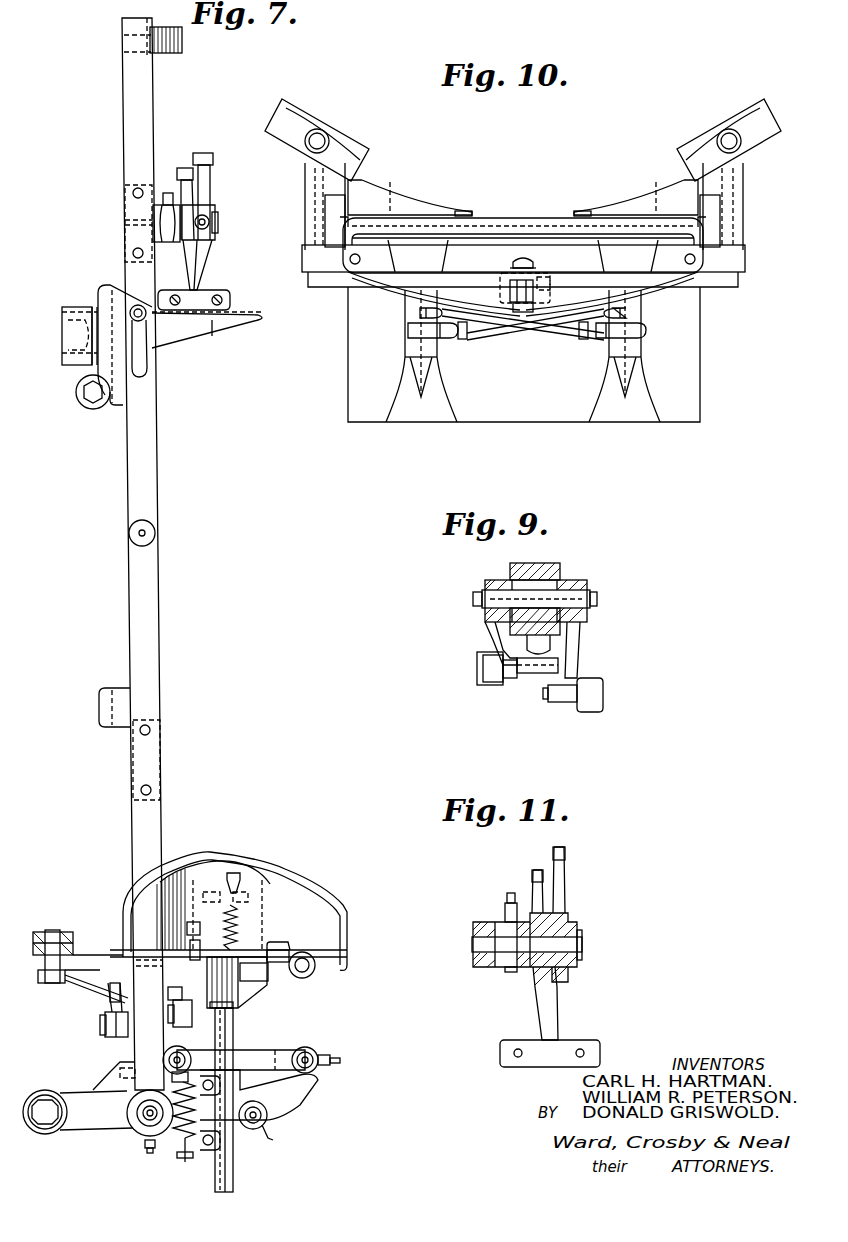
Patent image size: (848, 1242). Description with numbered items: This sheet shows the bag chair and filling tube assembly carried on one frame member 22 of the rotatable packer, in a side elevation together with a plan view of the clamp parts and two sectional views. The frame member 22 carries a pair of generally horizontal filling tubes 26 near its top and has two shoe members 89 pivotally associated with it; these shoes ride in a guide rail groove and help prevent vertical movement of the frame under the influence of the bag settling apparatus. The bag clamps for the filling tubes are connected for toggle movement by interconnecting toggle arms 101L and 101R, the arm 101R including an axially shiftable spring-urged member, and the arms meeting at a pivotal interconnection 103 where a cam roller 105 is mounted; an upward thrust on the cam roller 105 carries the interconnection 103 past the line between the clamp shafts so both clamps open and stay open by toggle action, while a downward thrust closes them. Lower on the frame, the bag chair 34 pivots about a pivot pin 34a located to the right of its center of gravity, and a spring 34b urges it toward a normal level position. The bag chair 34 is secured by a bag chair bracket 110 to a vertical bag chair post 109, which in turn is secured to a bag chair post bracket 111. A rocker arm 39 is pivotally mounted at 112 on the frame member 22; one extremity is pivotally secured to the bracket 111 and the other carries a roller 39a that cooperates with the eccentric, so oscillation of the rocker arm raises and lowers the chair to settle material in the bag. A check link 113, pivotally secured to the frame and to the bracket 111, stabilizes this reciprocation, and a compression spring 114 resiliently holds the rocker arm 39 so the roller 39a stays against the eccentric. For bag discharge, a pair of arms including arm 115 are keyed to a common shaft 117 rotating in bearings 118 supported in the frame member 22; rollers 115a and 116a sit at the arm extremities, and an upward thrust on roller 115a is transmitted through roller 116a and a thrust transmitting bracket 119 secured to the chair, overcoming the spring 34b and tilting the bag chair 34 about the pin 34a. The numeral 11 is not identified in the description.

In FIG. 7, the frame member 22 is at (160, 680).
In FIG. 7, the pair of filling tubes 26 is at (235, 325).
In FIG. 7, the bag chair 34 is at (300, 877).
In FIG. 7, the pivot pin 34a is at (316, 975).
In FIG. 7, the spring 34b is at (237, 925).
In FIG. 7, the rocker arm 39 is at (77, 1099).
In FIG. 7, the roller 39a is at (45, 1090).
In FIG. 7, the shoe member 89 is at (73, 930).
In FIG. 10, the shoe member 89 is at (302, 124).
In FIG. 10, the left toggle arm 101L is at (475, 287).
In FIG. 10, the right toggle arm 101R is at (588, 257).
In FIG. 10, the pivotal interconnection 103 is at (518, 256).
In FIG. 10, the cam roller 105 is at (535, 262).
In FIG. 10, the support leg 11 is at (405, 304).
In FIG. 7, the bag chair post 109 is at (233, 1175).
In FIG. 7, the bag chair bracket 110 is at (260, 998).
In FIG. 9, the bag chair bracket 110 is at (578, 650).
In FIG. 7, the bag chair post bracket 111 is at (282, 1105).
In FIG. 7, the pivot 112 is at (145, 1120).
In FIG. 7, the check link 113 is at (268, 1050).
In FIG. 7, the compression spring 114 is at (205, 1040).
In FIG. 9, the arm 115 is at (500, 633).
In FIG. 7, the roller 115a is at (105, 1035).
In FIG. 9, the roller 115a is at (498, 665).
In FIG. 7, the roller 116a is at (192, 1025).
In FIG. 9, the roller 116a is at (600, 682).
In FIG. 9, the common shaft 117 is at (570, 598).
In FIG. 11, the common shaft 117 is at (536, 957).
In FIG. 9, the bearings 118 is at (540, 563).
In FIG. 7, the thrust transmitting bracket 119 is at (185, 965).